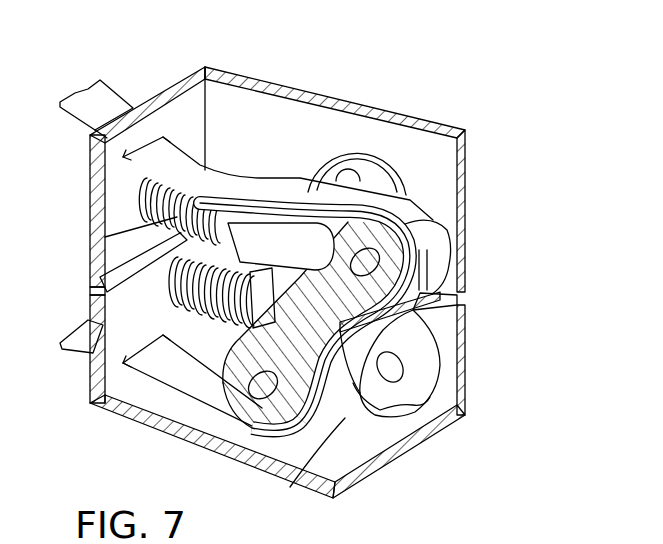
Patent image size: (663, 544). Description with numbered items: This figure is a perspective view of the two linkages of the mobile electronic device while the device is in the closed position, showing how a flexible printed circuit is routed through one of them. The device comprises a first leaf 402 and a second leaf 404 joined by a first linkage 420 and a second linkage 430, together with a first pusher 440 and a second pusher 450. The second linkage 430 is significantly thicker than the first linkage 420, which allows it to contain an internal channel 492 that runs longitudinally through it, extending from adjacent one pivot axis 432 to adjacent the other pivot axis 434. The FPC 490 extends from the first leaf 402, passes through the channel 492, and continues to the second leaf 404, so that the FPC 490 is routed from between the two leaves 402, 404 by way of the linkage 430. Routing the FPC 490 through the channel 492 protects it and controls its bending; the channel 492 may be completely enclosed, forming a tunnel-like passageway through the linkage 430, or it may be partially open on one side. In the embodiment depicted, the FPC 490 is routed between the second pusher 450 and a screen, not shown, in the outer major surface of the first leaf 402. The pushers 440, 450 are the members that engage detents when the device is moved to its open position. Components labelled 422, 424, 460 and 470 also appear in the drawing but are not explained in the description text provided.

The first leaf 402 is at (486, 222).
The second leaf 404 is at (437, 464).
The first linkage 420 is at (356, 134).
The lower hole 422 is at (395, 370).
The upper hole 424 is at (350, 176).
The second linkage 430 is at (310, 424).
The pivot axis 432 is at (352, 268).
The pivot axis 434 is at (257, 396).
The first pusher 440 is at (250, 307).
The second pusher 450 is at (283, 210).
The rail 460 is at (170, 278).
The upper spring 470 is at (108, 240).
The FPC 490 is at (218, 185).
The internal channel 492 is at (423, 288).